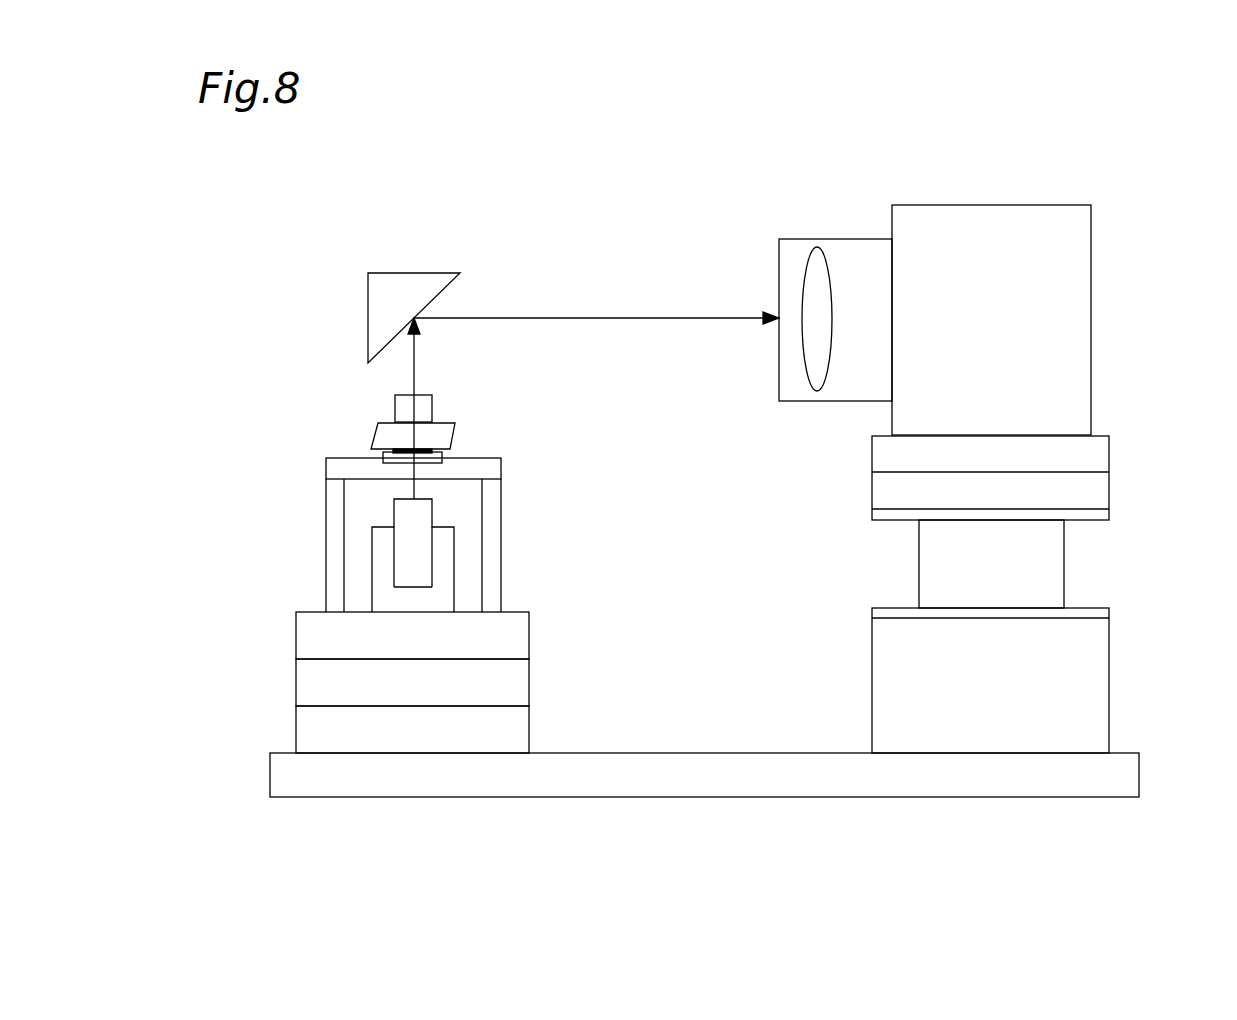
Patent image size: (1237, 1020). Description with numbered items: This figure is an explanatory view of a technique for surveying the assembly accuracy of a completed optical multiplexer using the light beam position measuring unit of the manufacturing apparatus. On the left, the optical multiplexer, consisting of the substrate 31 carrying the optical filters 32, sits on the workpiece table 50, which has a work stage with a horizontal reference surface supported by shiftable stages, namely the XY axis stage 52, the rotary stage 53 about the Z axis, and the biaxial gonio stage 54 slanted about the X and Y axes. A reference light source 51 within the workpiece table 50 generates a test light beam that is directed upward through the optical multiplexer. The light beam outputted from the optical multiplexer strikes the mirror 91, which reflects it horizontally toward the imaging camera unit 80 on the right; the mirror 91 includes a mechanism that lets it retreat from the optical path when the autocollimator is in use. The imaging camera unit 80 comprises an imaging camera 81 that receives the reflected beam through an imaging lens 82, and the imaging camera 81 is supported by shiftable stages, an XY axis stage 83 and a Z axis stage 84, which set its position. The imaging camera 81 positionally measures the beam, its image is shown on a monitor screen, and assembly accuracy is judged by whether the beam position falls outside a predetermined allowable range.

The substrate 31 is at (378, 433).
The optical filters 32 is at (395, 407).
The workpiece table 50 is at (501, 466).
The reference light source 51 is at (414, 543).
The XY axis stage 52 is at (412, 729).
The rotary stage 53 is at (412, 682).
The biaxial gonio stage 54 is at (412, 635).
The imaging camera unit 80 is at (1132, 232).
The imaging camera 81 is at (986, 205).
The imaging lens 82 is at (833, 239).
The XY axis stage 83 is at (1110, 490).
The Z axis stage 84 is at (1064, 564).
The mirror 91 is at (408, 272).